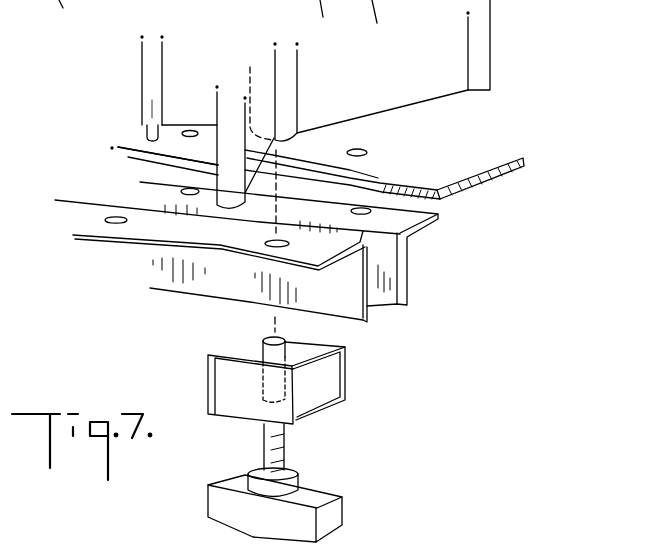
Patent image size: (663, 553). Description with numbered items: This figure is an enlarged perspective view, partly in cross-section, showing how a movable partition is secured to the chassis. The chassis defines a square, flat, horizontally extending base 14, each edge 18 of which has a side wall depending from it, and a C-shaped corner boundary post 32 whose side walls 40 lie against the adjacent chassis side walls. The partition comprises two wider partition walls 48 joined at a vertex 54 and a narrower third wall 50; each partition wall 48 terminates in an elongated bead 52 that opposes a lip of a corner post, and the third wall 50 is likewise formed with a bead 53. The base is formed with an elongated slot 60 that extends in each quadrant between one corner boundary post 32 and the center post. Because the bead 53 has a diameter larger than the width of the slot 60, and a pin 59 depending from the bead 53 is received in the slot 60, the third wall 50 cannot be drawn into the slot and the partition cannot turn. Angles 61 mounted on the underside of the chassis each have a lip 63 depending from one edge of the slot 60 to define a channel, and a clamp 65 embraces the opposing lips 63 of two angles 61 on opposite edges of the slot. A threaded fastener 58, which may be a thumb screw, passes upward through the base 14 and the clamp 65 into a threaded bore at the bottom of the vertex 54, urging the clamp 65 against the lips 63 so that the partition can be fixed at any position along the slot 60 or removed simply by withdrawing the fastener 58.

The base 14 is at (468, 187).
The edge 18 is at (76, 13).
The corner boundary post 32 is at (335, 21).
The side wall 40 is at (390, 22).
The partition wall 48 is at (273, 154).
The third wall 50 is at (182, 61).
The elongated bead 52 is at (489, 65).
The bead 53 is at (152, 82).
The vertex 54 is at (295, 90).
The threaded fastener 58 is at (280, 453).
The pin 59 is at (143, 135).
The elongated slot 60 is at (377, 174).
The angle 61 is at (403, 265).
The lip 63 is at (363, 320).
The clamp 65 is at (350, 383).